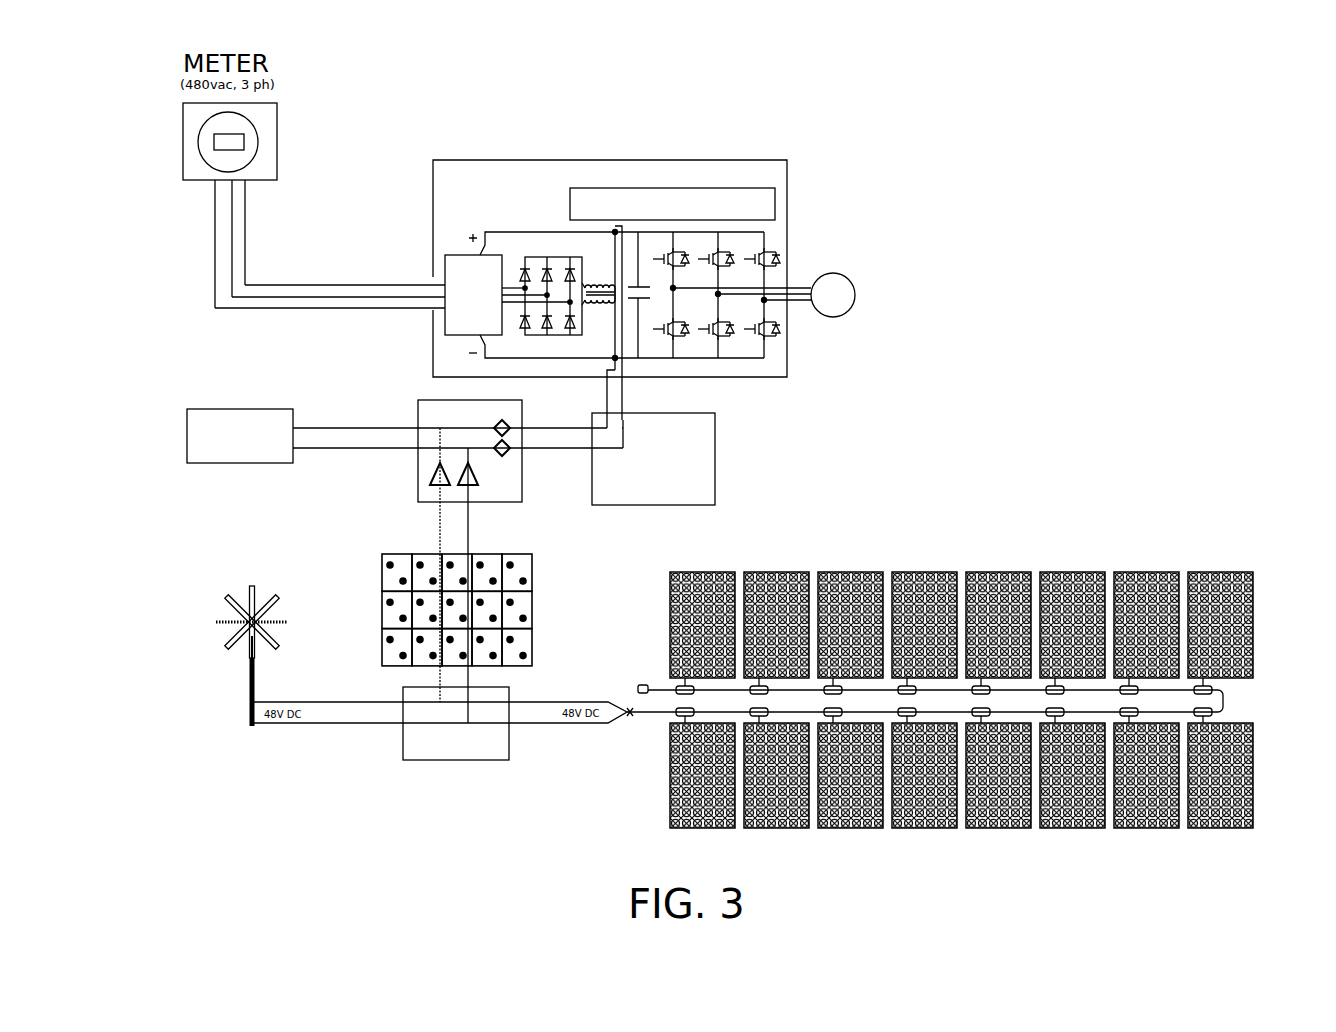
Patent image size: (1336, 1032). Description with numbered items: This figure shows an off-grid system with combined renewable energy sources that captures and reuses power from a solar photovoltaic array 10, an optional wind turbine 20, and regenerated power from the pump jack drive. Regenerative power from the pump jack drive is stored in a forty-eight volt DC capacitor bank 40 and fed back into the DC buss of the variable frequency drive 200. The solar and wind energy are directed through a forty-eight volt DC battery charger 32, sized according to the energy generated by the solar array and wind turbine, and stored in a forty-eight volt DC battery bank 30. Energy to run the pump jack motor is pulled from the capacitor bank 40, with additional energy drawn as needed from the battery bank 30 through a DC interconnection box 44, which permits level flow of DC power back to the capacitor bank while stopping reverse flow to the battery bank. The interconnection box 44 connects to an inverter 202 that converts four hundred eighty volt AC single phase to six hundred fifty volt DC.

The solar photovoltaic array 10 is at (990, 517).
The wind turbine 20 is at (238, 650).
The DC battery bank 30 is at (543, 621).
The DC battery charger 32 is at (456, 723).
The DC capacitor bank 40 is at (240, 449).
The DC interconnection box 44 is at (445, 551).
The variable frequency drive 200 is at (644, 270).
The inverter 202 is at (653, 459).